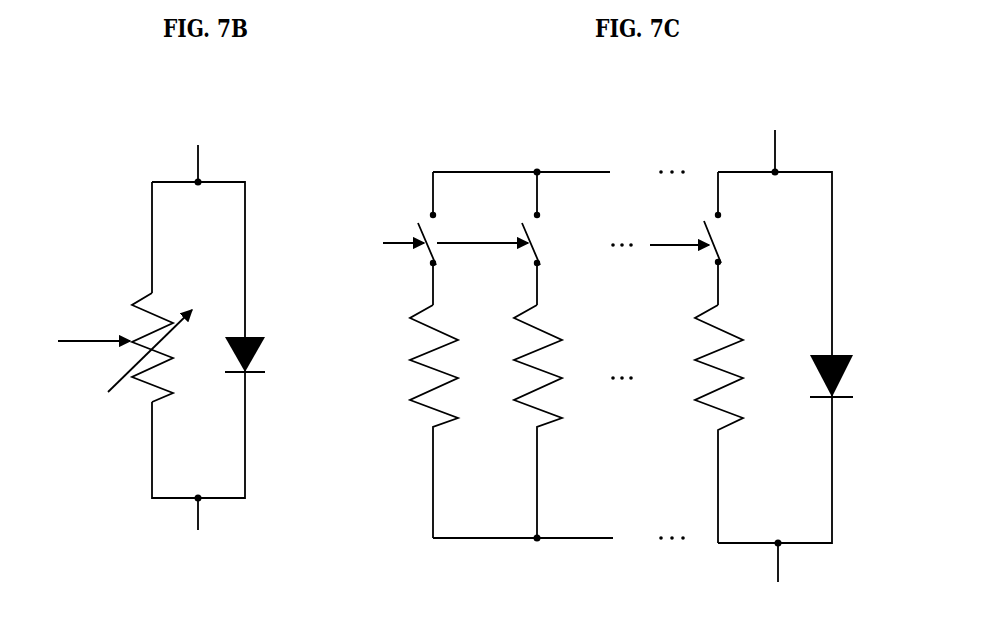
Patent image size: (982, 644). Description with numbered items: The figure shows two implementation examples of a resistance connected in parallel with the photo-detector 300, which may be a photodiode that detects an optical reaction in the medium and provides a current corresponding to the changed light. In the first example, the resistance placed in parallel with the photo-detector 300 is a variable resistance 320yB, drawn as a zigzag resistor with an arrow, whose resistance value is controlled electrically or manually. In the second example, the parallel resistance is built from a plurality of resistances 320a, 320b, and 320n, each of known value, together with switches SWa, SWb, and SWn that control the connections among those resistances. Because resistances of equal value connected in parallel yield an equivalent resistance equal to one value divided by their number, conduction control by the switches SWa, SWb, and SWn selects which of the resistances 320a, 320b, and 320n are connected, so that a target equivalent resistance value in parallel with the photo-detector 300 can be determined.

In FIG. 7B, the photo-detector 300 is at (260, 342).
In FIG. 7C, the photo-detector 300 is at (851, 361).
In FIG. 7B, the variable resistance 320yB is at (112, 392).
In FIG. 7C, the resistance 320a is at (450, 421).
In FIG. 7C, the resistance 320b is at (554, 421).
In FIG. 7C, the resistance 320n is at (730, 424).
In FIG. 7C, the switch SWa is at (428, 238).
In FIG. 7C, the switch SWb is at (509, 238).
In FIG. 7C, the switch SWn is at (705, 238).